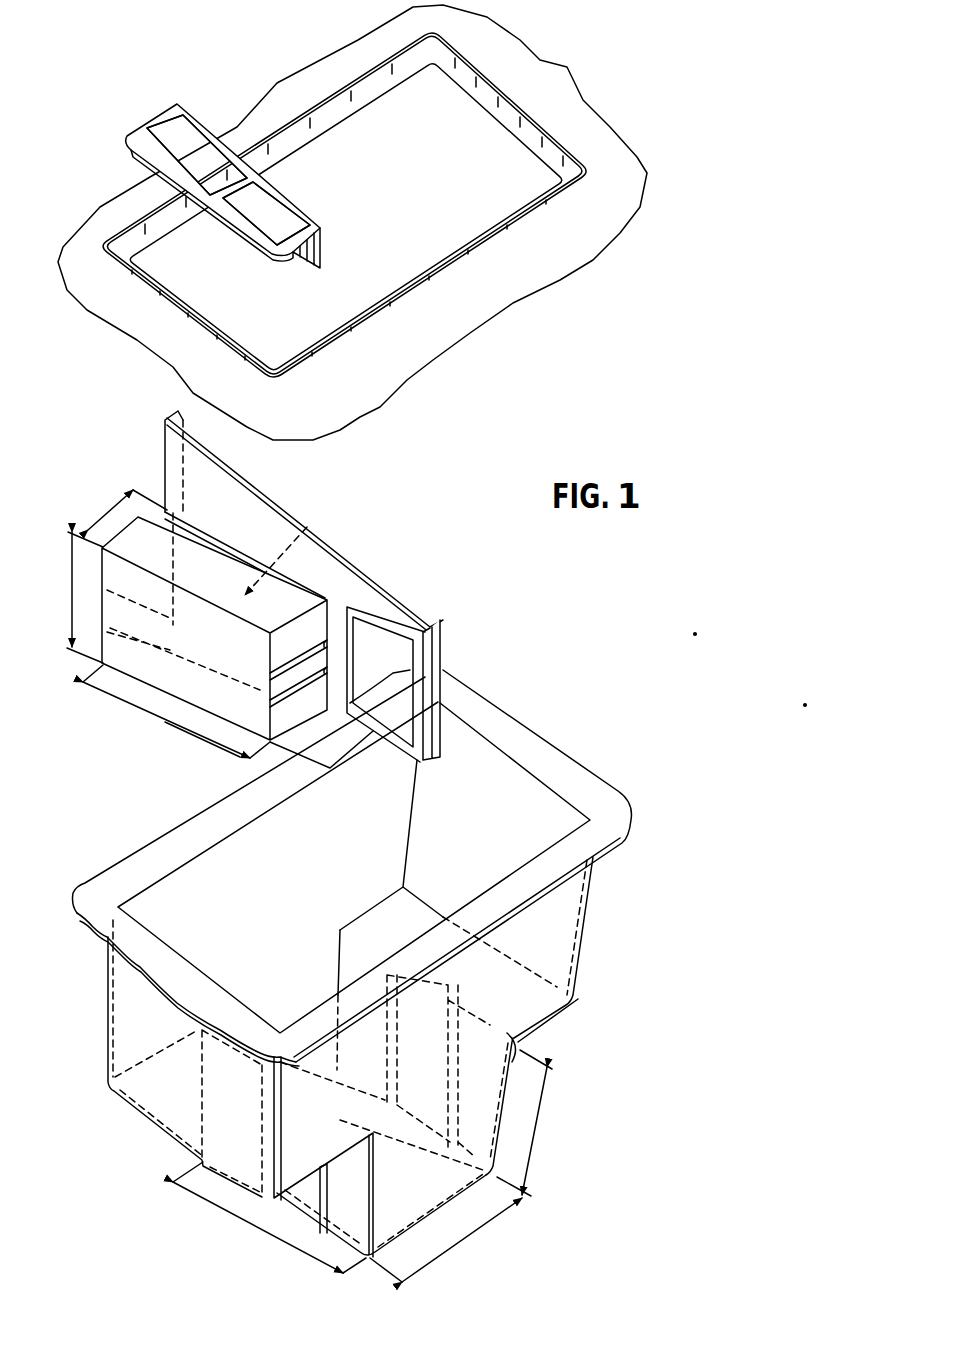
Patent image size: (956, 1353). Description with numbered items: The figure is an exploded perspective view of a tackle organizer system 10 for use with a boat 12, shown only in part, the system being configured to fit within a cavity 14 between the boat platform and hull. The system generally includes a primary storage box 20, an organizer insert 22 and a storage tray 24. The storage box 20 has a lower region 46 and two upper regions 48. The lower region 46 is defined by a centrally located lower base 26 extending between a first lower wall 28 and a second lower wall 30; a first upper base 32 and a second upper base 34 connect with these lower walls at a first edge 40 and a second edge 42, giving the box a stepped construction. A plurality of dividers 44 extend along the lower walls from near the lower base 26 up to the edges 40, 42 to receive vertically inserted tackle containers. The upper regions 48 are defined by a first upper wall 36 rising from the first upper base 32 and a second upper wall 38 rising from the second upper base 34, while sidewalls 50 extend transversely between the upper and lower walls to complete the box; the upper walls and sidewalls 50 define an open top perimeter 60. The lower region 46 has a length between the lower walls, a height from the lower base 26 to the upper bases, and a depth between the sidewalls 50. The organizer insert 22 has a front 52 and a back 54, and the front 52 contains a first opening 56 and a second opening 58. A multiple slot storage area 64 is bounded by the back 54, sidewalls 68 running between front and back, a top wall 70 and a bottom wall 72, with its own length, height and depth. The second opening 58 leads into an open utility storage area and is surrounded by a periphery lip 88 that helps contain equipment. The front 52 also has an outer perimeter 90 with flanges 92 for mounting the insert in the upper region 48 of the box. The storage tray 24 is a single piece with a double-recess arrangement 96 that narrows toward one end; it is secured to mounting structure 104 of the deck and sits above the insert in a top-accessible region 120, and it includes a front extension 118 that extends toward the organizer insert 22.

The tackle organizer system 10 is at (92, 64).
The boat 12 is at (633, 180).
The cavity 14 is at (483, 152).
The primary storage box 20 is at (611, 1000).
The organizer insert 22 is at (128, 468).
The storage tray 24 is at (236, 176).
The lower base 26 is at (470, 1193).
The first lower wall 28 is at (510, 1031).
The second lower wall 30 is at (357, 1219).
The first upper base 32 is at (390, 903).
The second upper base 34 is at (173, 1097).
The first upper wall 36 is at (503, 781).
The second upper wall 38 is at (133, 1023).
The first edge 40 is at (340, 930).
The second edge 42 is at (243, 1060).
The dividers 44 is at (444, 1080).
The lower region 46 is at (396, 1178).
The upper regions 48 is at (487, 845).
The sidewalls 50 is at (253, 838).
The front 52 is at (273, 504).
The back 54 is at (103, 663).
The first opening 56 is at (321, 552).
The second opening 58 is at (386, 613).
The open top perimeter 60 is at (478, 727).
The multiple slot storage area 64 is at (300, 531).
The sidewalls 68 is at (173, 533).
The top wall 70 is at (233, 572).
The bottom wall 72 is at (131, 681).
The periphery lip 88 is at (387, 723).
The outer perimeter 90 is at (195, 446).
The flanges 92 is at (166, 416).
The double-recess arrangement 96 is at (160, 150).
The mounting structure 104 is at (454, 257).
The front extension 118 is at (324, 250).
The top-accessible region 120 is at (262, 349).